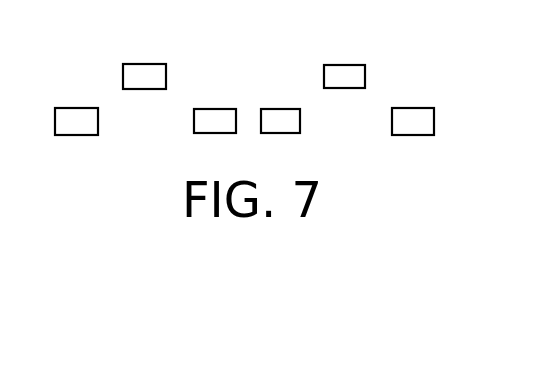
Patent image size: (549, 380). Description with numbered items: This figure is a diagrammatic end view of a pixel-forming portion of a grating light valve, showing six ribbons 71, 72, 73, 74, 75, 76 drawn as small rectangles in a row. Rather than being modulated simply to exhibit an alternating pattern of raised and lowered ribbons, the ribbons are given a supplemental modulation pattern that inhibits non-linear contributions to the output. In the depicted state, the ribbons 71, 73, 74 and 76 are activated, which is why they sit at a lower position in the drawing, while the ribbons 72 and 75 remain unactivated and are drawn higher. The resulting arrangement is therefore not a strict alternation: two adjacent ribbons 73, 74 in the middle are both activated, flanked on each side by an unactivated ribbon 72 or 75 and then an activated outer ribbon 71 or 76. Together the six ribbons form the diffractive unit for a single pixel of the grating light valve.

The ribbon 71 is at (76, 108).
The ribbon 72 is at (144, 64).
The ribbon 73 is at (214, 109).
The ribbon 74 is at (279, 109).
The ribbon 75 is at (343, 65).
The ribbon 76 is at (414, 108).